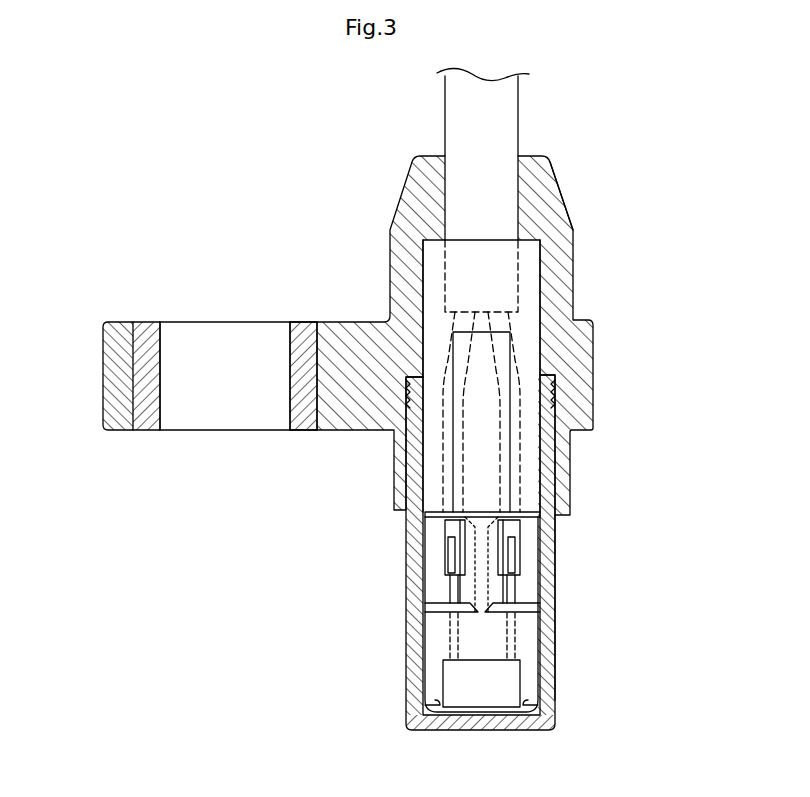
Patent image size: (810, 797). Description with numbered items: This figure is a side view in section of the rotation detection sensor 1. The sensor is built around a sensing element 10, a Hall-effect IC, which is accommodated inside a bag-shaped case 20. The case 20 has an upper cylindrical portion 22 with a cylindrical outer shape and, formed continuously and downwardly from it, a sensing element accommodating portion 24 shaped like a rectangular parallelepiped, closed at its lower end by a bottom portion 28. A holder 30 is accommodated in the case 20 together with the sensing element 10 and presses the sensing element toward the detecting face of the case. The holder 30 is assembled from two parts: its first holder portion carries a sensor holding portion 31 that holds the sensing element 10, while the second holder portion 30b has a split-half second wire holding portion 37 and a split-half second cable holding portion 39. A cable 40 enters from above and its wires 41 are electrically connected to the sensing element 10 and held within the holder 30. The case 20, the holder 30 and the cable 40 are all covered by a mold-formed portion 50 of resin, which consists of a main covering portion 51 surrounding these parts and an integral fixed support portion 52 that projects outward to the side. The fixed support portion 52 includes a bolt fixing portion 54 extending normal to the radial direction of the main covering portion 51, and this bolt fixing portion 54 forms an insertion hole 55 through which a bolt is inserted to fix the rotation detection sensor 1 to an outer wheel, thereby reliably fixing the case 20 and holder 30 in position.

The rotation detection sensor 1 is at (645, 132).
The sensing element 10 is at (482, 690).
The case 20 is at (406, 625).
The cylindrical portion 22 is at (415, 468).
The sensing element accommodating portion 24 is at (430, 556).
The bottom portion 28 is at (438, 703).
The holder 30 is at (522, 236).
The second holder portion 30b is at (420, 270).
The sensor holding portion 31 is at (548, 637).
The second wire holding portion 37 is at (533, 455).
The second cable holding portion 39 is at (527, 278).
The cable 40 is at (445, 118).
The wires 41 is at (450, 530).
The mold-formed portion 50 is at (392, 218).
The main covering portion 51 is at (566, 212).
The fixed support portion 52 is at (340, 323).
The bolt fixing portion 54 is at (103, 381).
The insertion hole 55 is at (216, 412).